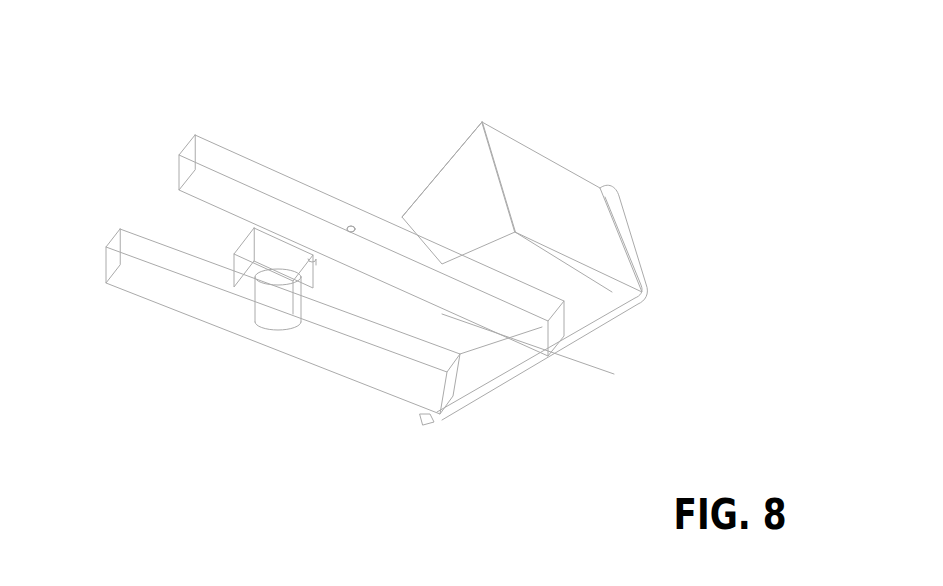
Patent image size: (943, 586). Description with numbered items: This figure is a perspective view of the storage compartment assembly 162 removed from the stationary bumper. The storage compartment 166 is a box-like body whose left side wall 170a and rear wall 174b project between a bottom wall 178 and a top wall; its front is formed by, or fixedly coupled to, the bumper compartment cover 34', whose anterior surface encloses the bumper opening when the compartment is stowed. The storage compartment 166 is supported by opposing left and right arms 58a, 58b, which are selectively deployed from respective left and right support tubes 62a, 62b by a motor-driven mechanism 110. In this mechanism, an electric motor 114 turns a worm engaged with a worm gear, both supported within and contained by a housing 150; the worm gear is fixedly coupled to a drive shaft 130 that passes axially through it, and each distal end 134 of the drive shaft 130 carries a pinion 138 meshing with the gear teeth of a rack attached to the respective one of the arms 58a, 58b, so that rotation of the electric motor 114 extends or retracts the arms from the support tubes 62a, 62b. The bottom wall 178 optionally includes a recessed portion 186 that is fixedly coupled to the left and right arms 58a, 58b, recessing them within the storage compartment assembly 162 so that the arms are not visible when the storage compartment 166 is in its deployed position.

The storage compartment assembly 162 is at (602, 114).
The left support tube 62a is at (262, 184).
The right support tube 62b is at (221, 304).
The rear wall 174b is at (451, 172).
The storage compartment 166 is at (528, 167).
The housing 150 is at (252, 253).
The distal end 134 is at (344, 218).
The pinion 138 is at (351, 229).
The left side wall 170a is at (557, 207).
The bumper compartment cover 34' is at (593, 302).
The drive shaft 130 is at (309, 252).
The motor-driven mechanism 110 is at (221, 282).
The bottom wall 178 is at (582, 282).
The left arm 58a is at (512, 306).
The electric motor 114 is at (258, 314).
The recessed portion 186 is at (467, 334).
The right arm 58b is at (432, 367).